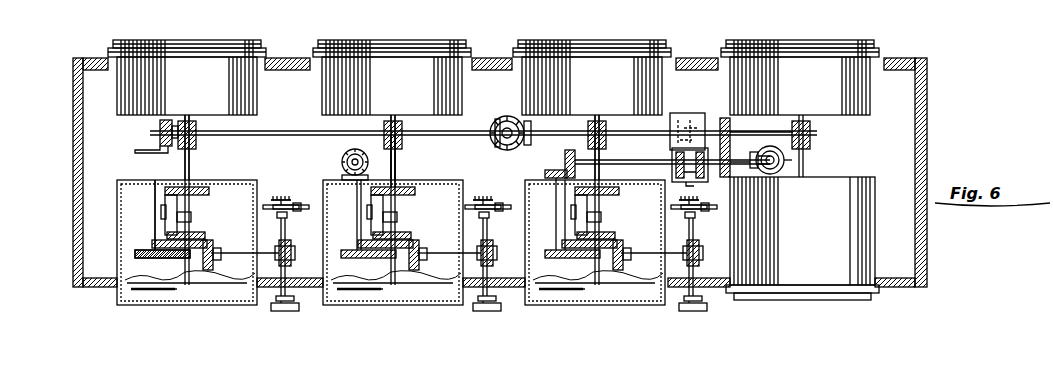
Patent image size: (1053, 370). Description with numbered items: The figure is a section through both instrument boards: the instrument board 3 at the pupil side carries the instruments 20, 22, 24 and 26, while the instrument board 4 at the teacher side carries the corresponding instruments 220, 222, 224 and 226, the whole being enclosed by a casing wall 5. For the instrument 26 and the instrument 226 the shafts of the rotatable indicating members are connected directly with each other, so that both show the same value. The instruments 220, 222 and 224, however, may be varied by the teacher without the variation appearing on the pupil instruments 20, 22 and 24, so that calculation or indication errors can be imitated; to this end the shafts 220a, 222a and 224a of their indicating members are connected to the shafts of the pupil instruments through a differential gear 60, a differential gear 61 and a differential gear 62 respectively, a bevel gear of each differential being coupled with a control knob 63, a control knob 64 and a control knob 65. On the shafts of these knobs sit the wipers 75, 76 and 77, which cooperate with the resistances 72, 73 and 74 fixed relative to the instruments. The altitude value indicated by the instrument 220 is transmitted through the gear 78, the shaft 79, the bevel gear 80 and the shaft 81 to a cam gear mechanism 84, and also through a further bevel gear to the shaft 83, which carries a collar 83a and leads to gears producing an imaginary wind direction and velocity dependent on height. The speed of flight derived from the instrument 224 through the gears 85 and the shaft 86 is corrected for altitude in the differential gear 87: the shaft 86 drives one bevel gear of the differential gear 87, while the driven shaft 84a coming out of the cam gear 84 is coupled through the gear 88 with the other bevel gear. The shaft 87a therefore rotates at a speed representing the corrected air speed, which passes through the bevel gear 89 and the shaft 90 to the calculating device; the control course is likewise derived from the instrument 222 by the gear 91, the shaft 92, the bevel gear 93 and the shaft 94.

The instrument board 3 is at (300, 62).
The instrument board 4 is at (101, 288).
The side wall of casing 5 is at (85, 192).
The instrument 20 is at (187, 77).
The instrument 22 is at (392, 77).
The instrument 24 is at (592, 77).
The instrument 26 is at (800, 77).
The differential gear 60 is at (202, 213).
The differential gear 61 is at (408, 208).
The differential gear 62 is at (610, 208).
The control knob 63 is at (282, 266).
The control knob 64 is at (484, 266).
The control knob 65 is at (690, 266).
The resistance 72 is at (302, 200).
The resistance 73 is at (504, 205).
The resistance 74 is at (708, 206).
The wiper 75 is at (292, 223).
The wiper 76 is at (494, 224).
The wiper 77 is at (700, 224).
The gear 78 is at (170, 258).
The shaft 79 is at (155, 222).
The bevel gear 80 is at (150, 140).
The shaft 81 is at (272, 136).
The shaft 83 is at (505, 150).
The collar of gear wheel 83a is at (518, 118).
The cam gear 84 is at (683, 113).
The driven shaft 84a is at (724, 118).
The gears 85 is at (548, 183).
The shaft 86 is at (622, 162).
The differential gear 87 is at (680, 150).
The shaft 87a is at (782, 146).
The gear 88 is at (762, 153).
The bevel gear 89 is at (781, 156).
The shaft 90 is at (786, 163).
The gear 91 is at (320, 270).
The shaft 92 is at (398, 188).
The bevel gear 93 is at (340, 166).
The shaft 94 is at (341, 159).
The instrument 220 is at (207, 305).
The shaft 220a is at (178, 280).
The instrument 222 is at (424, 305).
The shaft 222a is at (370, 300).
The instrument 224 is at (637, 305).
The shaft 224a is at (582, 300).
The instrument 226 is at (814, 300).